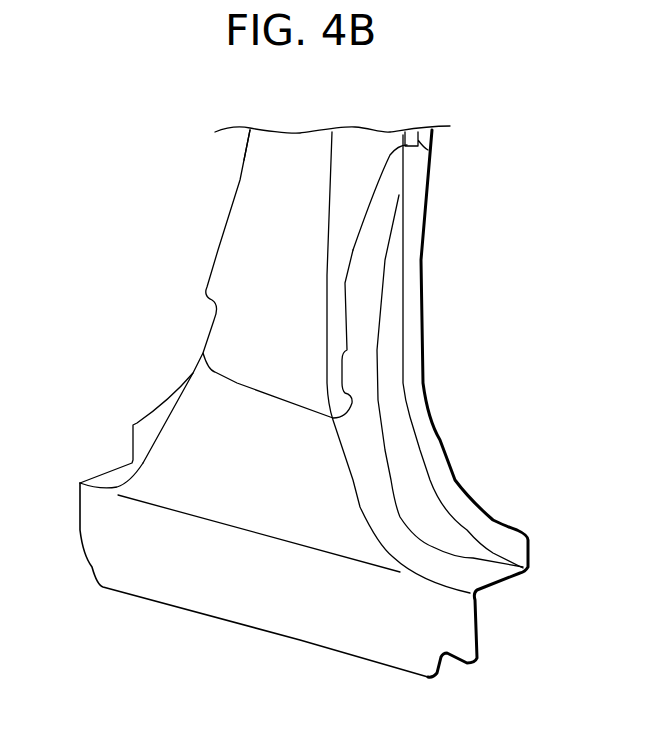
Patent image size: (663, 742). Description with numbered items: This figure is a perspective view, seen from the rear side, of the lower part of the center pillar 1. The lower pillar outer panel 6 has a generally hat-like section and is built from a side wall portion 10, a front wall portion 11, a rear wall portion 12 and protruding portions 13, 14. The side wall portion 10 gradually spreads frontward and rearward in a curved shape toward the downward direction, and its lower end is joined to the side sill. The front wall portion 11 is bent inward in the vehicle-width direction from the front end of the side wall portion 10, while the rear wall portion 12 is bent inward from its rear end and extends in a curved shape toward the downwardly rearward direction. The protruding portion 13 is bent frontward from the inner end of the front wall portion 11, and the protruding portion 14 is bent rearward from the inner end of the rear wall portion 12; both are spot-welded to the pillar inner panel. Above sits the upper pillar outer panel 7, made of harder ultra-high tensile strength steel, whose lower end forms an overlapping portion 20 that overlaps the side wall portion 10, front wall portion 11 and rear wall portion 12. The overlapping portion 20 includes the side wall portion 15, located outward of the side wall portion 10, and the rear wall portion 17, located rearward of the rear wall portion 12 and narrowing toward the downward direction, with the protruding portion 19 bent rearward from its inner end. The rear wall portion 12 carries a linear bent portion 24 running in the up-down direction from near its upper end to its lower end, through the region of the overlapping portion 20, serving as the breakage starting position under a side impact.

The center pillar 1 is at (476, 127).
The lower pillar outer panel 6 is at (148, 606).
The upper pillar outer panel 7 is at (212, 247).
The side wall portion 10 is at (270, 515).
The front wall portion 11 is at (107, 480).
The rear wall portion 12 is at (422, 482).
The protruding portion 13 is at (150, 427).
The protruding portion 14 is at (420, 413).
The side wall portion 15 is at (283, 142).
The rear wall portion 17 is at (365, 138).
The protruding portion 19 is at (427, 143).
The overlapping portion 20 is at (280, 327).
The linear bent portion 24 is at (387, 267).